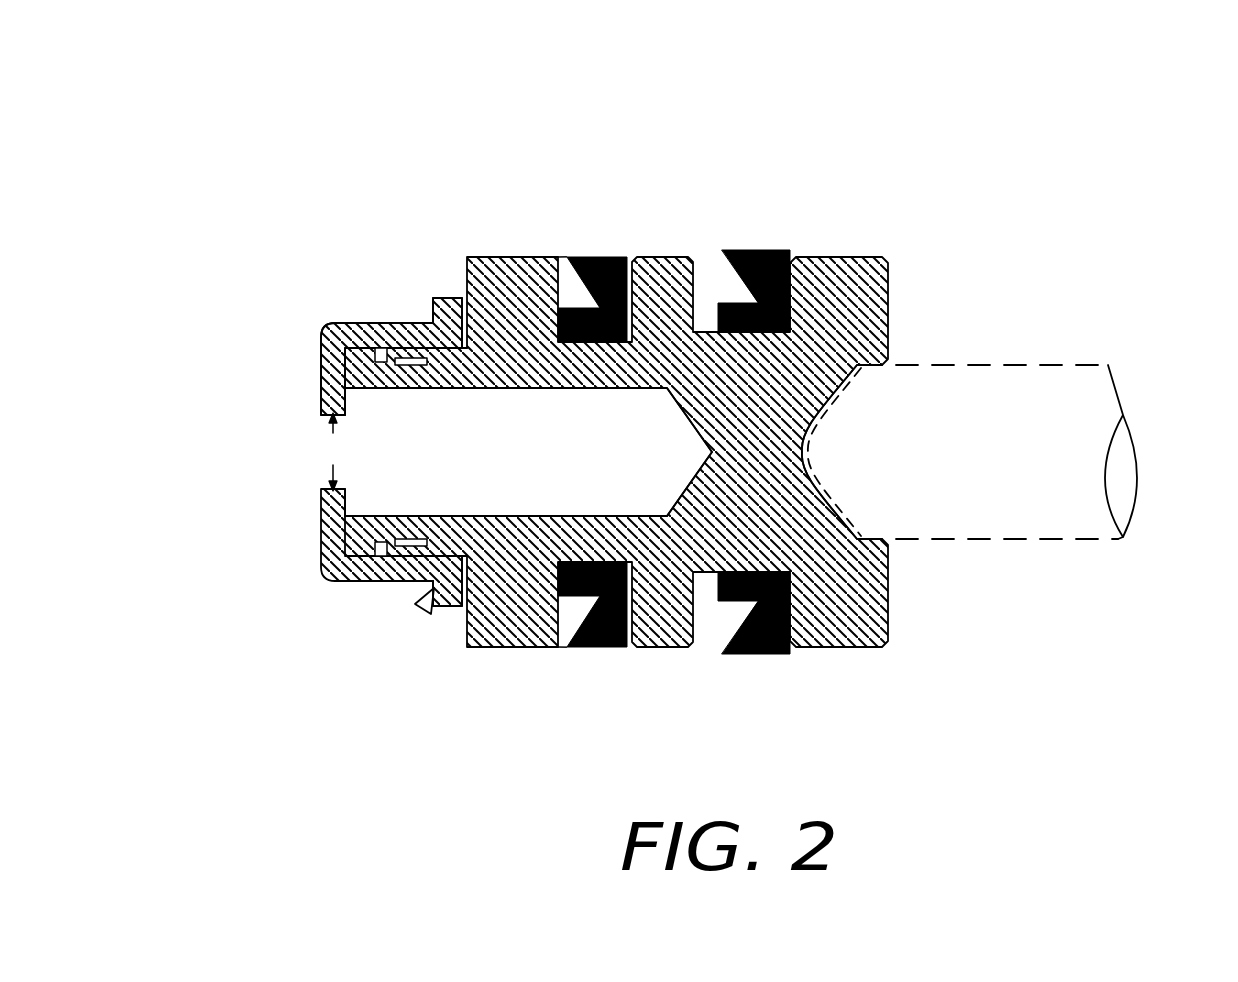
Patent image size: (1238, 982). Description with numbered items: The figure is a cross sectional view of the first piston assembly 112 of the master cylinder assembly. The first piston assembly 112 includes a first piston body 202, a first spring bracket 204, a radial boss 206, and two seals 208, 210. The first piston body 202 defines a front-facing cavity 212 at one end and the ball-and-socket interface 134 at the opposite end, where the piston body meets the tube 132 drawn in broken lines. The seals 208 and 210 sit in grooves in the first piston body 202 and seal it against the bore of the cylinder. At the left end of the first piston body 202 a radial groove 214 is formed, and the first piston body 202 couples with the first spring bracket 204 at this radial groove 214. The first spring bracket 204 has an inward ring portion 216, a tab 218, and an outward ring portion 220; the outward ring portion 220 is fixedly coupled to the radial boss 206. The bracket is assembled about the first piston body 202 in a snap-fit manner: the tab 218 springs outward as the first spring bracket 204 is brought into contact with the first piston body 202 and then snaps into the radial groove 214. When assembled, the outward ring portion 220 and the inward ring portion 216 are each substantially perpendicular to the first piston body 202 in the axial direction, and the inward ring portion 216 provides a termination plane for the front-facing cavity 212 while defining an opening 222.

The first piston assembly 112 is at (188, 145).
The tube 132 is at (1108, 365).
The ball-and-socket interface 134 is at (813, 477).
The first piston body 202 is at (890, 272).
The first spring bracket 204 is at (306, 372).
The radial boss 206 is at (429, 290).
The seal 208 is at (759, 251).
The seal 210 is at (594, 257).
The front-facing cavity 212 is at (607, 474).
The radial groove 214 is at (383, 348).
The inward ring portion 216 is at (347, 400).
The tab 218 is at (400, 518).
The outward ring portion 220 is at (450, 297).
The opening 222 is at (338, 452).